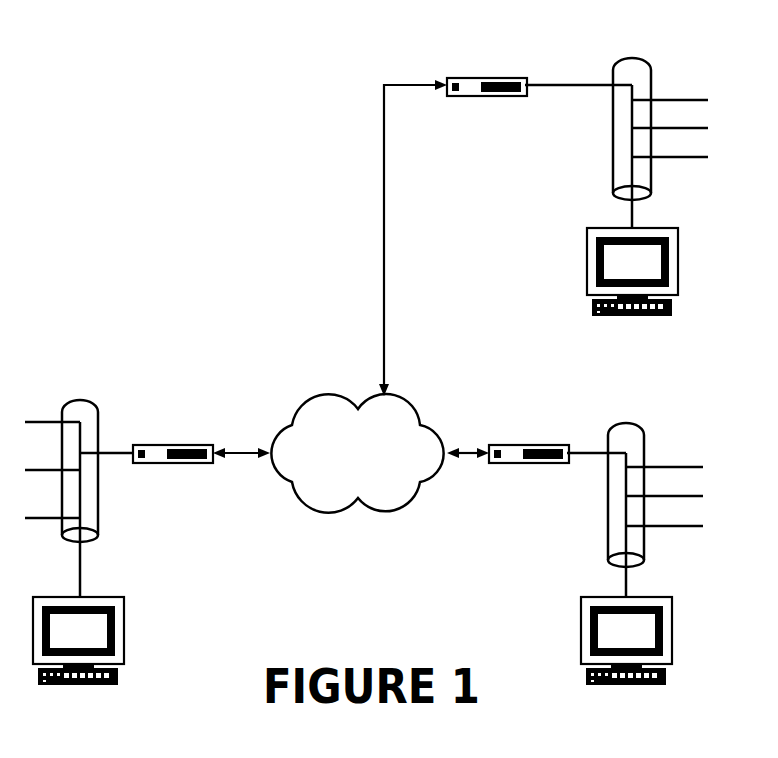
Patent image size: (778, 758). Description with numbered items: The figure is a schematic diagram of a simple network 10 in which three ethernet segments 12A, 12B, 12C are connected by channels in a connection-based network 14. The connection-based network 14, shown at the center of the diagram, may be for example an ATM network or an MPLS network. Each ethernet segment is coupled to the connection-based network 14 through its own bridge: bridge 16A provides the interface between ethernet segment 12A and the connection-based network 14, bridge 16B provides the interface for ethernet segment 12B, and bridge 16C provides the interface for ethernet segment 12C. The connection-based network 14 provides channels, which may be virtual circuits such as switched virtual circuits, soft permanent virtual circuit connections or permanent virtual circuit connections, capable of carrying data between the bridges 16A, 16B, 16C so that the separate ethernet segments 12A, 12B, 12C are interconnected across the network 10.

The network 10 is at (163, 104).
The ethernet segment 12A is at (81, 400).
The ethernet segment 12B is at (628, 423).
The ethernet segment 12C is at (649, 26).
The connection-based network 14 is at (336, 394).
The bridge 16A is at (174, 445).
The bridge 16B is at (526, 445).
The bridge 16C is at (486, 78).